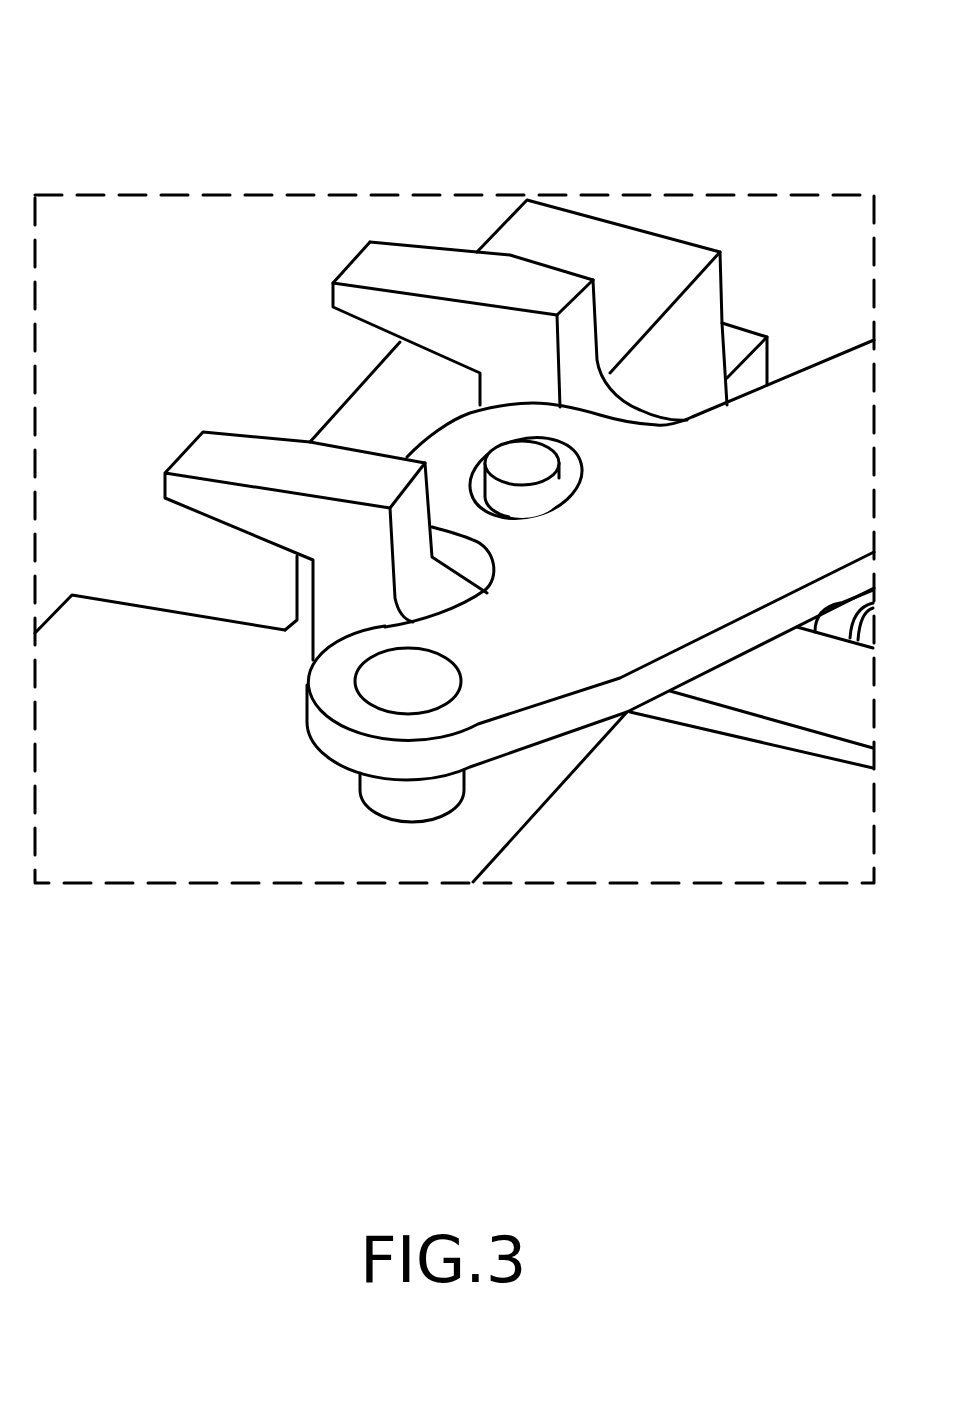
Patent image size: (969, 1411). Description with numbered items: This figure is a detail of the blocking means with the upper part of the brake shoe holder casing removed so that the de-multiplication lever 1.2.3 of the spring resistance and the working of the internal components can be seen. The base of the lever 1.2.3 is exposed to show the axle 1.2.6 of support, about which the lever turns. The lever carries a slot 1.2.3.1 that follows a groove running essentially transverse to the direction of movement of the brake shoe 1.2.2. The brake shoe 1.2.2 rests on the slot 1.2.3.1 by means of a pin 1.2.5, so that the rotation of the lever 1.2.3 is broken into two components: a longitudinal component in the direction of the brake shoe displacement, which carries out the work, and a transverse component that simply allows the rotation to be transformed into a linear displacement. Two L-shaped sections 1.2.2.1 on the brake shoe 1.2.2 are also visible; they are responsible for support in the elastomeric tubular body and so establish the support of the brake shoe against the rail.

The brake shoe 1.2.2 is at (825, 690).
The L-shaped sections 1.2.2.1 is at (350, 304).
The lever 1.2.3 is at (835, 408).
The slot 1.2.3.1 is at (478, 492).
The pin 1.2.5 is at (525, 456).
The axle of support 1.2.6 is at (397, 685).